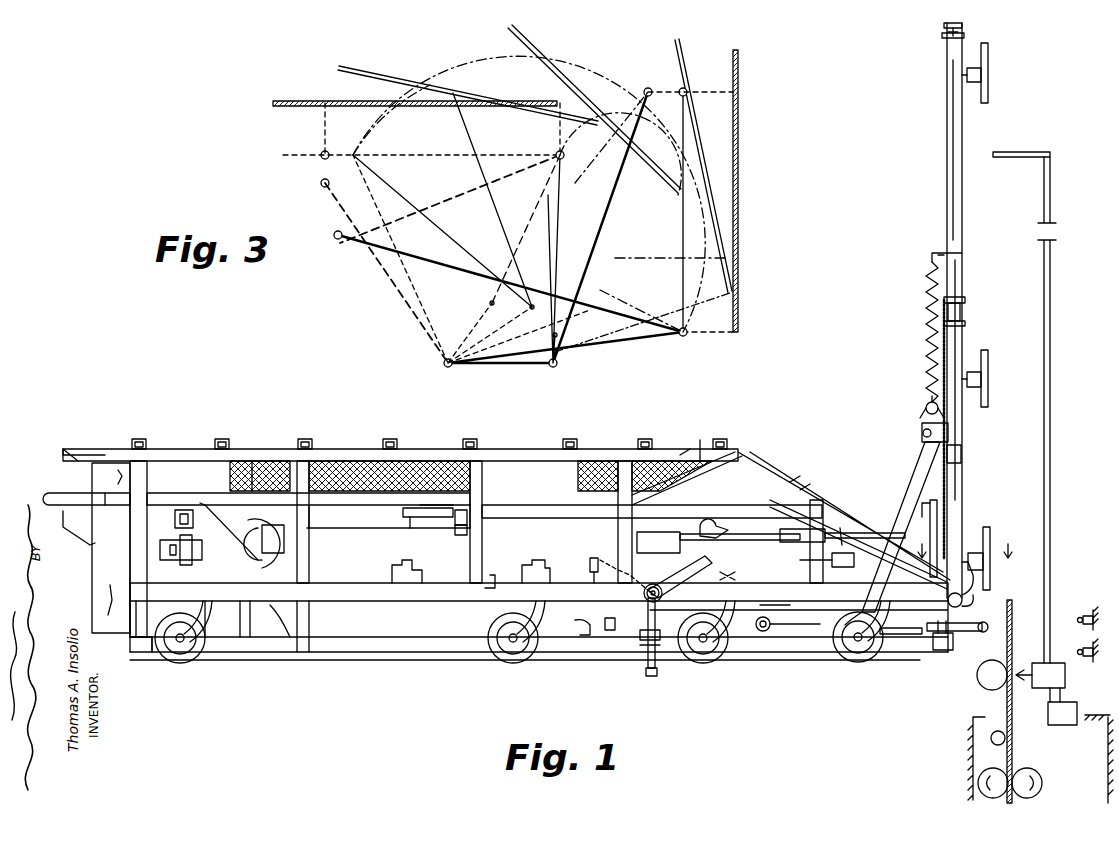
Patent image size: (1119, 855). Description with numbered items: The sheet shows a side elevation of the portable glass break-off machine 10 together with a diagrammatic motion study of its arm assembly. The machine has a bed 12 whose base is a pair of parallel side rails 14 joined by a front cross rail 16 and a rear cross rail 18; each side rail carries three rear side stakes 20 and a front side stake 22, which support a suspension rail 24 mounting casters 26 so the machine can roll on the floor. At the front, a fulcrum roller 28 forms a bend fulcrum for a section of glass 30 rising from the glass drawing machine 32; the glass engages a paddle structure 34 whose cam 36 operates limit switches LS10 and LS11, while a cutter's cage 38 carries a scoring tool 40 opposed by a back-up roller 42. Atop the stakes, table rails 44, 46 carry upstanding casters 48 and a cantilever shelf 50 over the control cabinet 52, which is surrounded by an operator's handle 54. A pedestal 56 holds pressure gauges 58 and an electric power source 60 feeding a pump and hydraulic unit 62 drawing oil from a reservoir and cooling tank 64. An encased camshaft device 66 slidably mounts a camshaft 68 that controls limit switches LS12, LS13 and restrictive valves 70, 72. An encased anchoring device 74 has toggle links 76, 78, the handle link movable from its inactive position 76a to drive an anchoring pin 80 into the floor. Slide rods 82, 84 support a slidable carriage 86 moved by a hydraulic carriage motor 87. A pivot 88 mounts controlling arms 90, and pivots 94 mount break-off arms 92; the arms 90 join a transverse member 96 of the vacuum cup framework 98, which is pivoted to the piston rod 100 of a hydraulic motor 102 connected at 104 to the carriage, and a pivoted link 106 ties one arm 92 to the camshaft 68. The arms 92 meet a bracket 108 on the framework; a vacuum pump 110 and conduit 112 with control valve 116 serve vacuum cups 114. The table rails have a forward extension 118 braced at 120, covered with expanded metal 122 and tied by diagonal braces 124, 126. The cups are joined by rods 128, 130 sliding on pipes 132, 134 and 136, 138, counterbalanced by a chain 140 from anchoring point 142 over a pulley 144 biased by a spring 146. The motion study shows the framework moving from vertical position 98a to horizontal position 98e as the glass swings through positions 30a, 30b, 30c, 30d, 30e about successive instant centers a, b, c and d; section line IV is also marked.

In FIG. 1, the portable glass break-off machine 10 is at (742, 431).
In FIG. 1, the bed 12 is at (127, 560).
In FIG. 1, the side rails 14 is at (245, 652).
In FIG. 1, the front cross rail 16 is at (945, 652).
In FIG. 1, the rear cross rail 18 is at (152, 652).
In FIG. 1, the side stakes 20 is at (138, 480).
In FIG. 1, the front side stake 22 is at (627, 462).
In FIG. 1, the suspension rail 24 is at (438, 590).
In FIG. 1, the casters 26 is at (512, 655).
In FIG. 1, the fulcrum roller 28 is at (985, 632).
In FIG. 1, the section of glass 30 is at (1013, 635).
In FIG. 3, the initial glass position 30a is at (738, 75).
In FIG. 3, the intermediate glass position 30b is at (683, 68).
In FIG. 3, the glass position 30c is at (540, 58).
In FIG. 3, the glass position 30d is at (395, 80).
In FIG. 3, the final glass position 30e is at (312, 101).
In FIG. 1, the glass drawing machine 32 is at (1108, 720).
In FIG. 1, the paddle structure 34 is at (1043, 189).
In FIG. 1, the switch engaging cam 36 is at (1068, 722).
In FIG. 1, the carriage supported cutter's cage 38 is at (1065, 682).
In FIG. 1, the scoring tool 40 is at (1022, 668).
In FIG. 1, the back-up roller 42 is at (990, 690).
In FIG. 1, the table rail 44 is at (288, 461).
In FIG. 1, the table rail 46 is at (255, 461).
In FIG. 1, the upstanding casters 48 is at (390, 439).
In FIG. 1, the cantilever shelf portion 50 is at (103, 458).
In FIG. 1, the control cabinet 52 is at (100, 473).
In FIG. 1, the operator's handle 54 is at (35, 503).
In FIG. 1, the pedestal 56 is at (215, 515).
In FIG. 1, the pressure gauges 58 is at (175, 520).
In FIG. 1, the source of electric power 60 is at (180, 548).
In FIG. 1, the pump and hydraulic unit 62 is at (249, 543).
In FIG. 1, the oil reservoir and cooling tank 64 is at (300, 652).
In FIG. 1, the encased camshaft device 66 is at (345, 530).
In FIG. 1, the camshaft 68 is at (685, 548).
In FIG. 1, the restrictive valve 70 is at (410, 565).
In FIG. 1, the restrictive valve 72 is at (522, 566).
In FIG. 1, the encased anchoring device 74 is at (655, 650).
In FIG. 1, the toggle link 76 is at (670, 580).
In FIG. 1, the inactive position of toggle link 76a is at (610, 562).
In FIG. 1, the toggle link 78 is at (645, 648).
In FIG. 1, the anchoring pin 80 is at (652, 678).
In FIG. 1, the slide rod 82 is at (905, 635).
In FIG. 1, the slide rod 84 is at (665, 598).
In FIG. 1, the slidable carriage 86 is at (735, 567).
In FIG. 1, the hydraulic carriage motor 87 is at (600, 622).
In FIG. 1, the pivot 88 is at (778, 622).
In FIG. 3, the pivot 88 is at (445, 368).
In FIG. 1, the controlling arms 90 is at (778, 595).
In FIG. 3, the controlling arms 90 is at (628, 338).
In FIG. 1, the break-off arms 92 is at (916, 465).
In FIG. 3, the break-off arms 92 is at (645, 103).
In FIG. 1, the pivots 94 is at (855, 615).
In FIG. 3, the pivots 94 is at (549, 368).
In FIG. 1, the transverse frame member 96 is at (964, 609).
In FIG. 1, the vacuum cup framework 98 is at (962, 131).
In FIG. 3, the vertical framework position 98a is at (683, 133).
In FIG. 3, the horizontal framework position 98e is at (318, 166).
In FIG. 1, the piston rod 100 is at (828, 551).
In FIG. 1, the hydraulic piston and cylinder motor 102 is at (795, 530).
In FIG. 3, the hydraulic piston and cylinder motor 102 is at (393, 250).
In FIG. 1, the pivotal connection 104 is at (718, 522).
In FIG. 1, the pivoted link 106 is at (830, 525).
In FIG. 1, the bracket 108 is at (948, 430).
In FIG. 1, the vacuum pump 110 is at (403, 518).
In FIG. 1, the vacuum conduit 112 is at (460, 528).
In FIG. 1, the vacuum cups 114 is at (988, 76).
In FIG. 1, the control valve 116 is at (467, 515).
In FIG. 1, the cantilevered forward extension portion 118 is at (700, 440).
In FIG. 1, the brace 120 is at (712, 474).
In FIG. 1, the expanded metal section 122 is at (698, 460).
In FIG. 1, the diagonal brace 124 is at (795, 485).
In FIG. 1, the diagonal brace 126 is at (745, 468).
In FIG. 1, the vertically extending rod 128 is at (962, 465).
In FIG. 1, the vertically extending rod 130 is at (965, 305).
In FIG. 1, the pipe 132 is at (965, 300).
In FIG. 1, the pipe 134 is at (965, 326).
In FIG. 1, the pipe 136 is at (962, 36).
In FIG. 1, the pipe 138 is at (942, 37).
In FIG. 1, the flexible chain 140 is at (947, 496).
In FIG. 1, the chain anchoring point 142 is at (923, 433).
In FIG. 1, the pulley 144 is at (926, 408).
In FIG. 1, the spring 146 is at (932, 270).
In FIG. 1, the limit switch LS10 is at (1078, 645).
In FIG. 1, the limit switch LS11 is at (1085, 616).
In FIG. 1, the limit switch LS12 is at (569, 570).
In FIG. 1, the limit switch LS13 is at (493, 573).
In FIG. 1, the section line IV is at (965, 542).
In FIG. 3, the instant center a is at (641, 325).
In FIG. 3, the instant center b is at (550, 325).
In FIG. 3, the instant center c is at (500, 205).
In FIG. 3, the instant center d is at (525, 233).